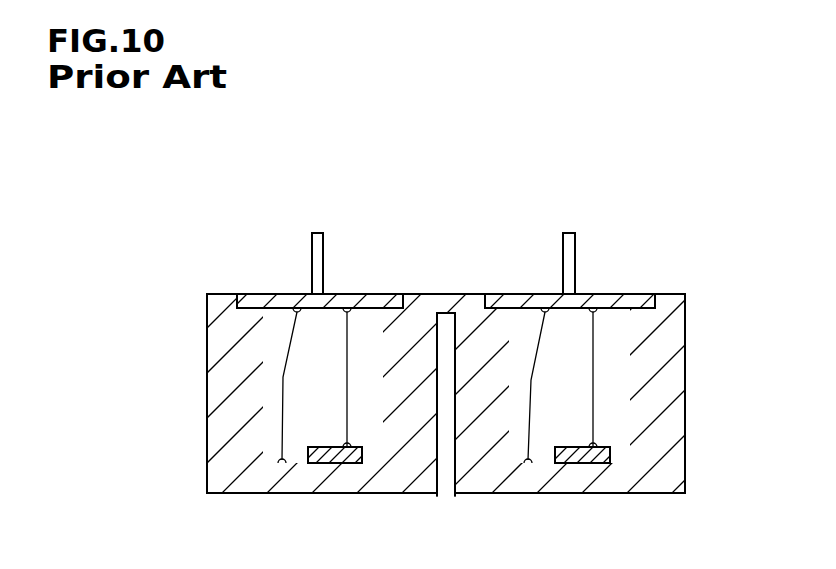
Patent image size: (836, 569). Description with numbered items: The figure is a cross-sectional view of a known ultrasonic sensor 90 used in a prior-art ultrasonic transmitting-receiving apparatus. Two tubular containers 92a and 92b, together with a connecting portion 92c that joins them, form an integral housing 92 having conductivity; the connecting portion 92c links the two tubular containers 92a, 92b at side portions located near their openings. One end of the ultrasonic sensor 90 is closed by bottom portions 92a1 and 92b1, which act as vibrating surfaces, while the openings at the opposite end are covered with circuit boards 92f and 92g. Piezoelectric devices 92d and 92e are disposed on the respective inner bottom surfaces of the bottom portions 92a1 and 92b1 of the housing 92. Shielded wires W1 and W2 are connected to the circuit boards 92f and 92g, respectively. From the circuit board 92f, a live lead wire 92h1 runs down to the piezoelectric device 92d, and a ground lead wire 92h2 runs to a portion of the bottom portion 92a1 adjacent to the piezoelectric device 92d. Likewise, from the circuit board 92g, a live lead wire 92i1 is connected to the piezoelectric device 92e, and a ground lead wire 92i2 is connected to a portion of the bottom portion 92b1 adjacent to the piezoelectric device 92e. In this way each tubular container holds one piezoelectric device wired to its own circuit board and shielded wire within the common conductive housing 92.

The ultrasonic sensor 90 is at (153, 177).
The housing 92 is at (205, 500).
The tubular container 92a is at (685, 408).
The bottom portion 92a1 is at (600, 493).
The tubular container 92b is at (207, 365).
The bottom portion 92b1 is at (352, 493).
The connecting portion 92c is at (446, 310).
The piezoelectric device 92d is at (576, 458).
The piezoelectric device 92e is at (327, 458).
The circuit board 92f is at (615, 306).
The circuit board 92g is at (343, 306).
The live lead wire 92h1 is at (593, 360).
The ground lead wire 92h2 is at (537, 358).
The live lead wire 92i1 is at (347, 414).
The ground lead wire 92i2 is at (290, 358).
The shielded wire W1 is at (563, 248).
The shielded wire W2 is at (312, 248).